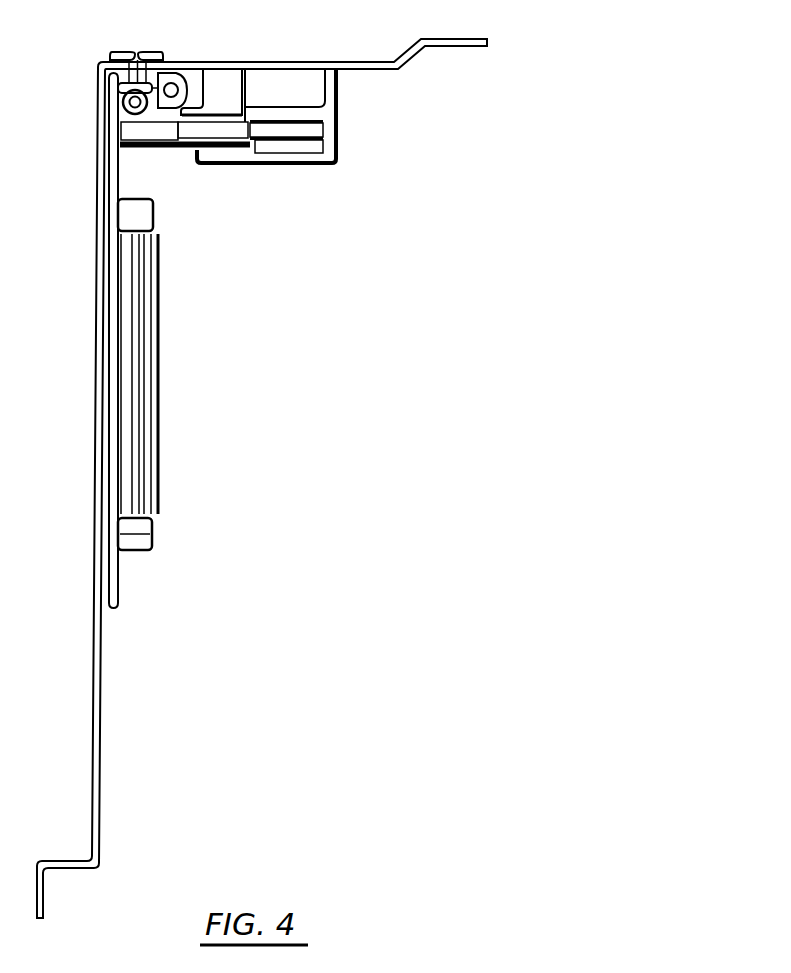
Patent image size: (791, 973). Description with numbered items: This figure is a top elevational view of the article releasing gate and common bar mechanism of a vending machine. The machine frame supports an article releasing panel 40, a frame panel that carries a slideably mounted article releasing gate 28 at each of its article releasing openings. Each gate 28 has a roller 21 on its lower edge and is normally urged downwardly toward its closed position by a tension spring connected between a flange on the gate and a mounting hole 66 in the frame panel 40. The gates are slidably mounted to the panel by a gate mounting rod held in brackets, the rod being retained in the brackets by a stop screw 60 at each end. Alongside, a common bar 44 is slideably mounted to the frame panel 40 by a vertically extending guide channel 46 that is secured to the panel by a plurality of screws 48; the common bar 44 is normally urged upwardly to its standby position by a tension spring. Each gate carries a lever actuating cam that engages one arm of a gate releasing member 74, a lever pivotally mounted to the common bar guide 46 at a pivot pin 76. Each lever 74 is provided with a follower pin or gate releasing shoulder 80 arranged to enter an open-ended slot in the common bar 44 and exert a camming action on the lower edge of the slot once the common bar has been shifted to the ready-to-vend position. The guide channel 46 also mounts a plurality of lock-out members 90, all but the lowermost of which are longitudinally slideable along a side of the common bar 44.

The article releasing panel 40 is at (455, 41).
The article releasing gate 28 is at (110, 319).
The roller 21 is at (134, 407).
The stop screw 60 is at (124, 50).
The mounting hole 66 is at (163, 78).
The screw 48 is at (220, 56).
The guide channel 46 is at (328, 90).
The common bar 44 is at (323, 128).
The gate releasing shoulder 80 is at (240, 122).
The gate releasing member 74 is at (183, 157).
The pivot pin 76 is at (205, 151).
The lock-out member 90 is at (297, 146).